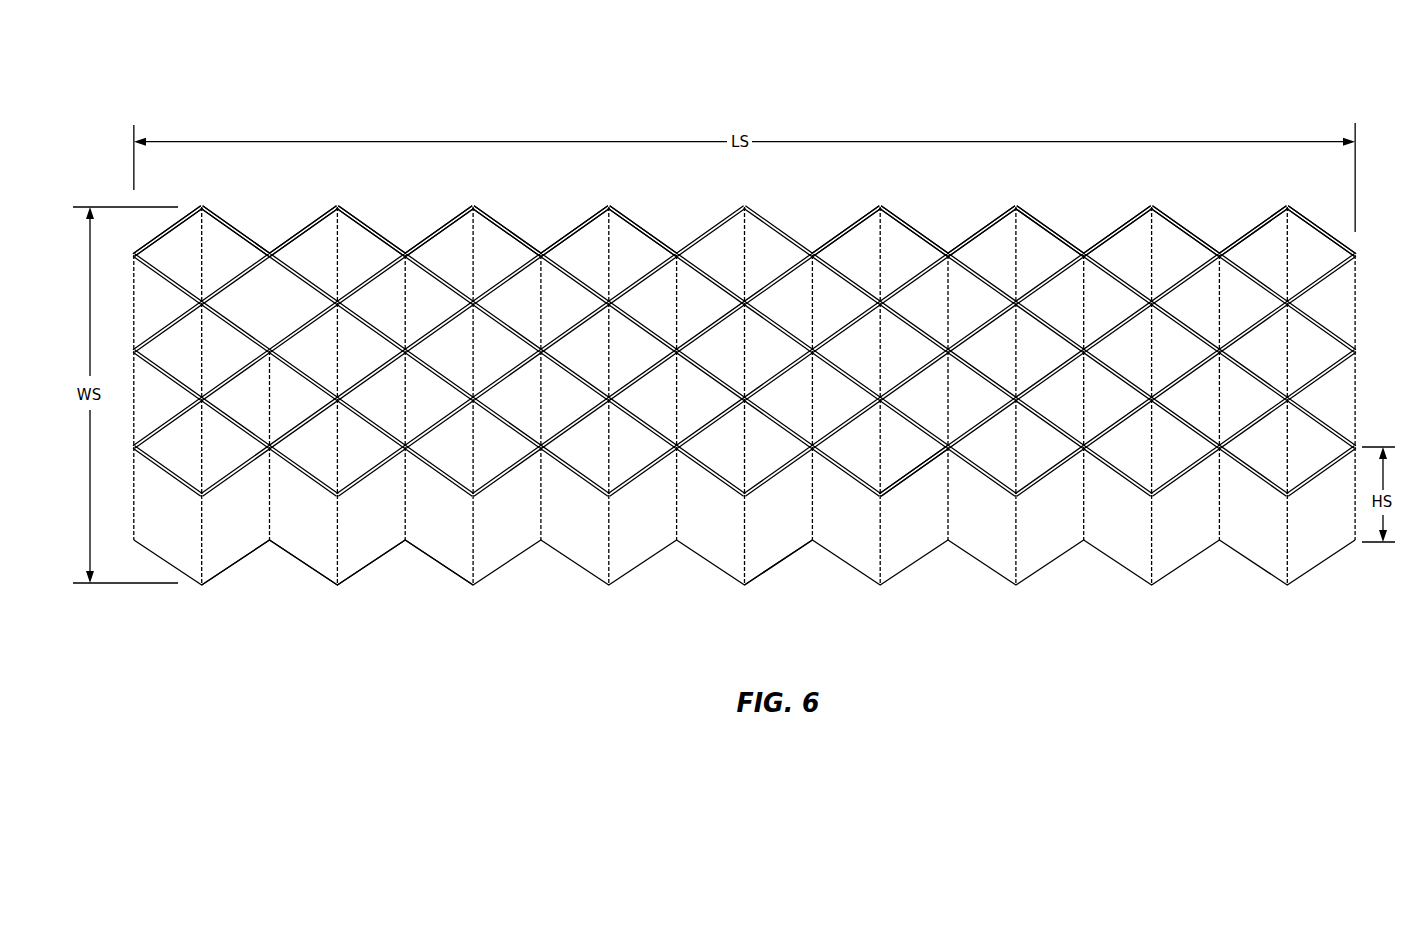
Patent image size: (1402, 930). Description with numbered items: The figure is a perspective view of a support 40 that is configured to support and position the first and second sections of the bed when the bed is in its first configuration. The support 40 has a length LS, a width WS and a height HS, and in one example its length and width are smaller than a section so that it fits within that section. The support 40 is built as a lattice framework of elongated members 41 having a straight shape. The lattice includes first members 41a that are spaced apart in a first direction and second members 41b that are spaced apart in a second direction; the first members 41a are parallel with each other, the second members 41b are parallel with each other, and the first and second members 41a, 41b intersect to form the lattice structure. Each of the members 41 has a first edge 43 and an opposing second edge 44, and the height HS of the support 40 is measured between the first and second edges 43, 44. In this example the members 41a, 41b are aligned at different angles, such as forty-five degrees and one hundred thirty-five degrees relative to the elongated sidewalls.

The support 40 is at (1118, 113).
The elongated members 41 is at (245, 532).
The first members 41a is at (647, 233).
The second members 41b is at (1253, 232).
The first edge 43 is at (911, 476).
The second edge 44 is at (780, 565).